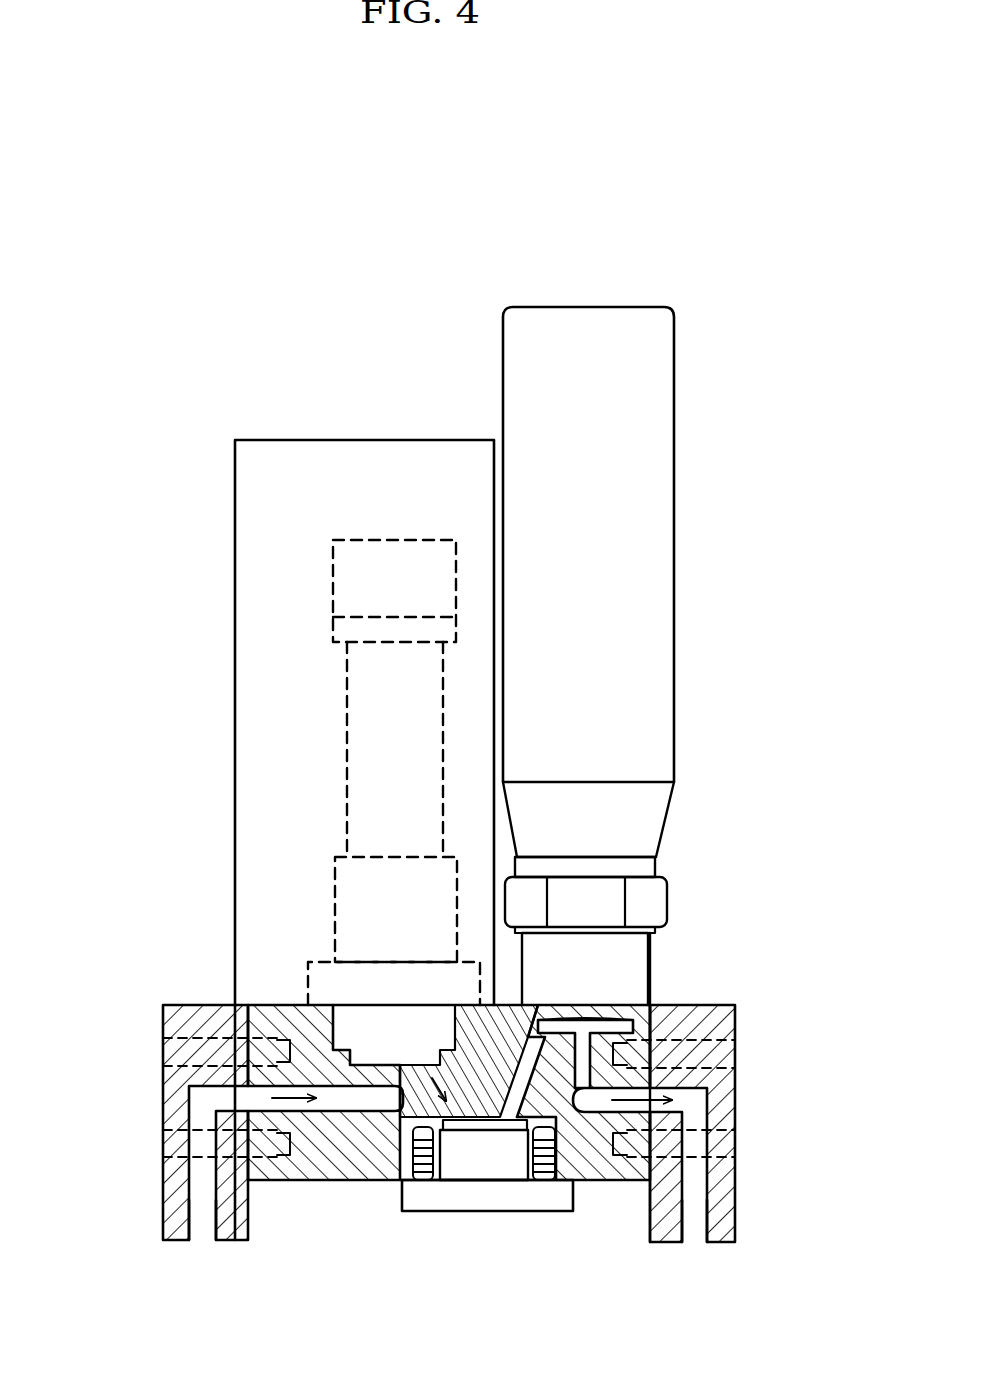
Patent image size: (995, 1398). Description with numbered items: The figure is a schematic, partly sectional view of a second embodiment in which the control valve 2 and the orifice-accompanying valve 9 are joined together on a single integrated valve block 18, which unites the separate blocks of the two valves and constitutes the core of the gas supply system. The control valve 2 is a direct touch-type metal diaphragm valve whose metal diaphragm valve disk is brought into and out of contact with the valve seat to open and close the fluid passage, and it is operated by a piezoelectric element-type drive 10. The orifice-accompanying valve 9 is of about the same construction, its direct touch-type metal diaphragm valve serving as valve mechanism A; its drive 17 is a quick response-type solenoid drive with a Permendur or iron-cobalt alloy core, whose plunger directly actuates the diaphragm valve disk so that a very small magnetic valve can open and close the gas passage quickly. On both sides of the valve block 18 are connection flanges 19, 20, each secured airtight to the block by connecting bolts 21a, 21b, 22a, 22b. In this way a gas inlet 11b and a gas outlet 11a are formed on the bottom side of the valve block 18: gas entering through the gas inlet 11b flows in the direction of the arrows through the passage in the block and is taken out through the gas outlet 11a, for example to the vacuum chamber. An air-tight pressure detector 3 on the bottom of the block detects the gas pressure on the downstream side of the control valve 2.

The control valve 2 is at (231, 832).
The pressure detector 3 is at (500, 1160).
The orifice-accompanying valve 9 is at (668, 950).
The drive 10 is at (345, 743).
The gas outlet 11a is at (692, 1228).
The gas inlet 11b is at (202, 1222).
The drive 17 is at (652, 570).
The valve block 18 is at (358, 1155).
The connection flange 19 is at (190, 1013).
The connection flange 20 is at (723, 1022).
The connecting bolt 21a is at (163, 1055).
The connecting bolt 21b is at (165, 1138).
The connecting bolt 22a is at (737, 1060).
The connecting bolt 22b is at (737, 1148).
The valve mechanism A is at (600, 1020).